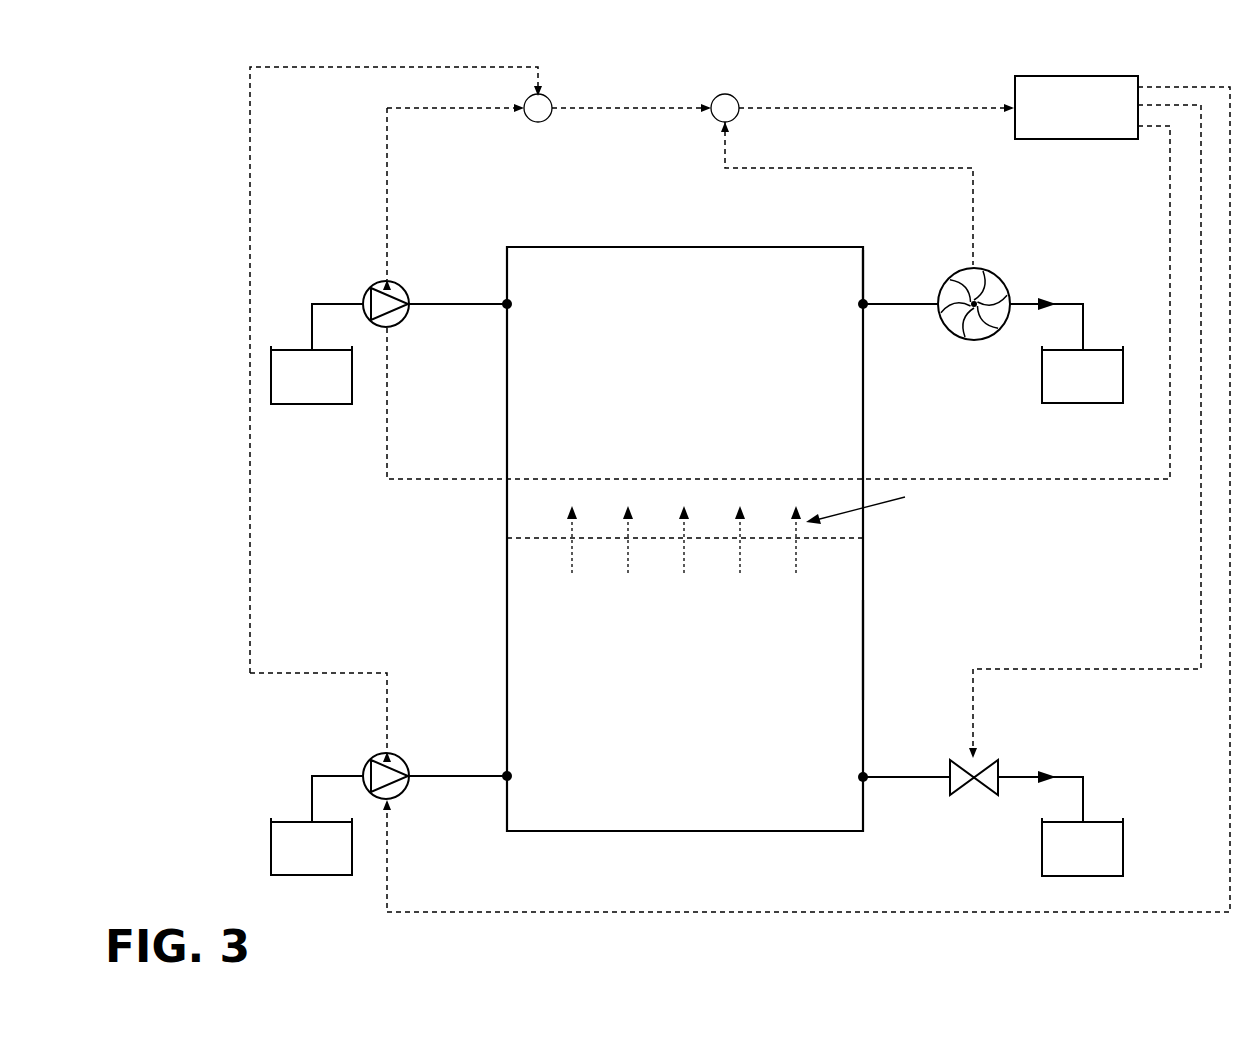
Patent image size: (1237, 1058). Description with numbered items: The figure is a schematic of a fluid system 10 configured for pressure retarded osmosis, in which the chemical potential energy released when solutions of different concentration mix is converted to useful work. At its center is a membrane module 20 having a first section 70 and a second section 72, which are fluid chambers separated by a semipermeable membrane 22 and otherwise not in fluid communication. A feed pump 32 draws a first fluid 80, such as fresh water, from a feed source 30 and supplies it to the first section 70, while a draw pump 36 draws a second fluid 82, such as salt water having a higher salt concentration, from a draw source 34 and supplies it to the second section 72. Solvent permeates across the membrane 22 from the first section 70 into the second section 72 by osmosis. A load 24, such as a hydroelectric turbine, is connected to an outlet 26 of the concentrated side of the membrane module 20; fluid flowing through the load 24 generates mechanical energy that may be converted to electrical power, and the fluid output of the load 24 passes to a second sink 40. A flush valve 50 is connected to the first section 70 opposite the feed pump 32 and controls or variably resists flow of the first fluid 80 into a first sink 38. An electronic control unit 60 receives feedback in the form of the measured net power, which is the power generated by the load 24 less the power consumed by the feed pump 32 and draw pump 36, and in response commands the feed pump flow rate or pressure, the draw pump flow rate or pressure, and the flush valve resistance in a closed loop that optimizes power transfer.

The fluid system 10 is at (196, 126).
The membrane module 20 is at (723, 516).
The semipermeable membrane 22 is at (537, 540).
The load 24 is at (987, 259).
The outlet 26 is at (874, 316).
The feed source 30 is at (271, 848).
The feed pump 32 is at (378, 755).
The draw source 34 is at (271, 372).
The draw pump 36 is at (374, 284).
The first sink 38 is at (1123, 840).
The second sink 40 is at (1123, 368).
The flush valve 50 is at (1004, 757).
The electronic control unit 60 is at (1057, 140).
The first section 70 is at (863, 650).
The second section 72 is at (863, 275).
The first fluid 80 is at (538, 815).
The second fluid 82 is at (538, 286).